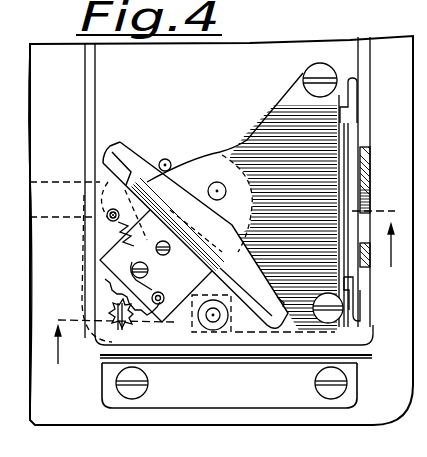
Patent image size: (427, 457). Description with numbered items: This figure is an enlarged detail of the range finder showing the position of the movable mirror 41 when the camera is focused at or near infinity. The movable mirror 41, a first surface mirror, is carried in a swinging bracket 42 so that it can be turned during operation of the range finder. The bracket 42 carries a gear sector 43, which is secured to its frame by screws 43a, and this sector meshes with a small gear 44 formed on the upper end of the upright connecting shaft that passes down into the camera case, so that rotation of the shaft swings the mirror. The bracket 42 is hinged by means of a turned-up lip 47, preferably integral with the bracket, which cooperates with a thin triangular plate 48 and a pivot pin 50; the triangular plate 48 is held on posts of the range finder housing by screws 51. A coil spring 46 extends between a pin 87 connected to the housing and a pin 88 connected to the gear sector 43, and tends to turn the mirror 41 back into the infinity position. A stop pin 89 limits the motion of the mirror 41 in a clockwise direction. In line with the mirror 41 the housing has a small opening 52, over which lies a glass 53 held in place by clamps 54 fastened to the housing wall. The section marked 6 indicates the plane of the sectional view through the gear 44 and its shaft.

The section line 6- 6 is at (224, 279).
The movable mirror 41 is at (128, 166).
The swinging bracket 42 is at (111, 151).
The gear sector 43 is at (180, 322).
The screws 43a is at (176, 208).
The small gear 44 is at (110, 342).
The coil spring 46 is at (118, 227).
The turned-up lip 47 is at (185, 165).
The triangular plate 48 is at (275, 128).
The pivot pin 50 is at (218, 180).
The screws 51 is at (313, 71).
The small opening 52 is at (366, 224).
The glass 53 is at (351, 129).
The clamps 54 is at (355, 92).
The pin 87 is at (107, 213).
The pin 88 is at (164, 294).
The stop pin 89 is at (166, 158).